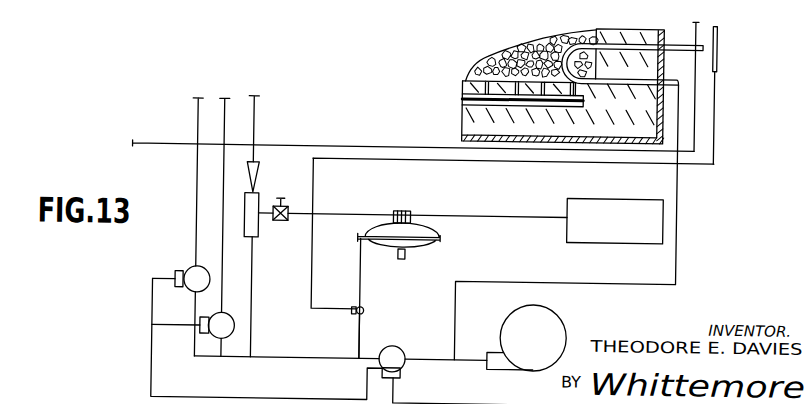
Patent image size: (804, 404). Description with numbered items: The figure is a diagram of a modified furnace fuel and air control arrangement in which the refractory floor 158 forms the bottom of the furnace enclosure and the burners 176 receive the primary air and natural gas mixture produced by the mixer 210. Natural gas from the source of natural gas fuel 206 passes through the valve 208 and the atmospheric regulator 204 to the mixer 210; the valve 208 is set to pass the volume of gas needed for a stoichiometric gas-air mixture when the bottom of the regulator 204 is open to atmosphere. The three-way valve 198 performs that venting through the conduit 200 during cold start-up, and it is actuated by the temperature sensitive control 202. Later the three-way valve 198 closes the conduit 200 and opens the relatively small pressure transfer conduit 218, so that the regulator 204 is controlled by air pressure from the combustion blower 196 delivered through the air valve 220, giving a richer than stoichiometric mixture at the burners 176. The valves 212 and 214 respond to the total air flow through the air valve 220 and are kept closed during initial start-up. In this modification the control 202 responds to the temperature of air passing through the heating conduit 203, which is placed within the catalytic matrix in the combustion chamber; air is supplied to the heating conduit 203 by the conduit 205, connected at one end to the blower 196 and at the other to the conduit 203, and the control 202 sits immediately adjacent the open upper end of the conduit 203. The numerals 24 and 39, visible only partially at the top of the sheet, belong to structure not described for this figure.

The furnace chamber 24 is at (623, 4).
The rod 39 is at (713, 6).
The refractory floor 158 is at (460, 119).
The burners 176 is at (460, 100).
The combustion blower 196 is at (563, 323).
The three-way valve 198 is at (367, 309).
The conduit 200 is at (380, 312).
The temperature sensitive control 202 is at (717, 48).
The heating conduit 203 is at (676, 82).
The atmospheric regulator 204 is at (442, 232).
The conduit 205 is at (677, 271).
The source of natural gas fuel 206 is at (603, 197).
The valve 208 is at (293, 224).
The mixer 210 is at (254, 182).
The valve 212 is at (219, 343).
The valve 214 is at (183, 268).
The pressure transfer conduit 218 is at (361, 330).
The air valve 220 is at (404, 373).